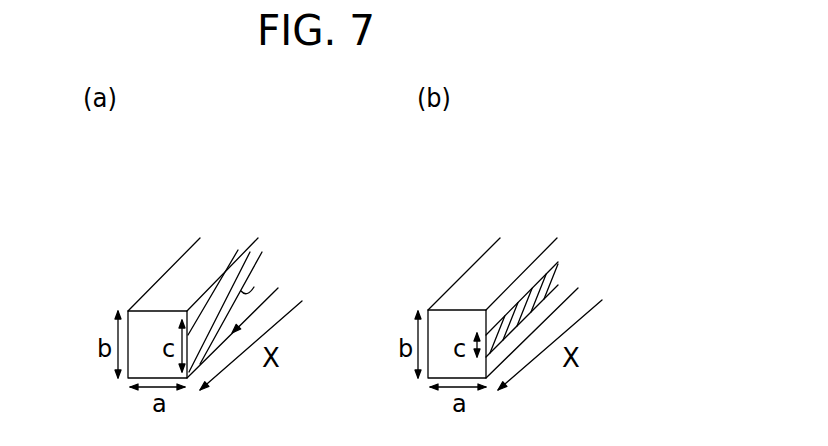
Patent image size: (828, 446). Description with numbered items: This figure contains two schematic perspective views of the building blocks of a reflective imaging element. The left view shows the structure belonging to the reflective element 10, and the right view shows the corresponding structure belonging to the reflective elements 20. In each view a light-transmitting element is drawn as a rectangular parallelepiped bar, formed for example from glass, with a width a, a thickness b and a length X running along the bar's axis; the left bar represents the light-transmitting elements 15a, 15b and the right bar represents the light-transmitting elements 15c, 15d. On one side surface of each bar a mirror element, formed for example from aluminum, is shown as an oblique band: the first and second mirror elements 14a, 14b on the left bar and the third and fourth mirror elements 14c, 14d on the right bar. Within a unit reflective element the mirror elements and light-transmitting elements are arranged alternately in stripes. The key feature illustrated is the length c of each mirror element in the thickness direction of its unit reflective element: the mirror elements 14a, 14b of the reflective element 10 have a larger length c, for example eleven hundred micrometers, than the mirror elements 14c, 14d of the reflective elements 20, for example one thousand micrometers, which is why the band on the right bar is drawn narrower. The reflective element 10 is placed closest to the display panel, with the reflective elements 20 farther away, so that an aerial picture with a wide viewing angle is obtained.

The reflective element 10 is at (185, 220).
The light-transmitting element 15a is at (219, 243).
The light-transmitting element 15b is at (196, 275).
The first mirror element 14a is at (283, 304).
The second mirror element 14b is at (258, 283).
The reflective element 20 is at (513, 213).
The light-transmitting element 15c is at (533, 233).
The light-transmitting element 15d is at (525, 255).
The third mirror element 14c is at (588, 302).
The fourth mirror element 14d is at (556, 278).